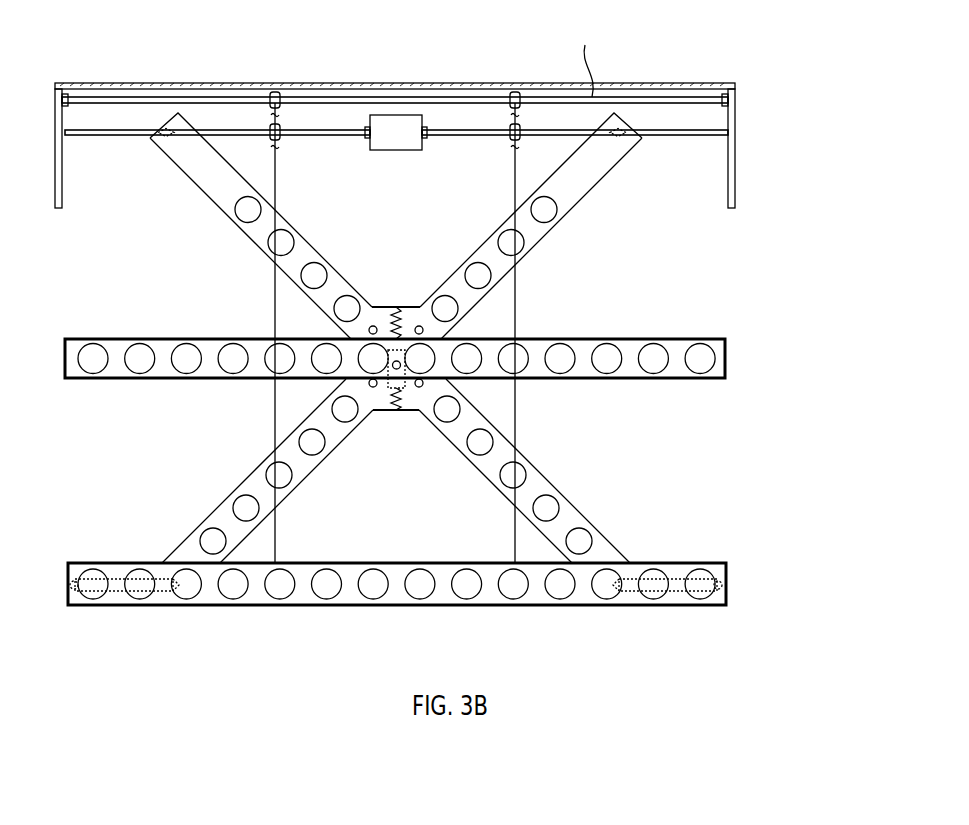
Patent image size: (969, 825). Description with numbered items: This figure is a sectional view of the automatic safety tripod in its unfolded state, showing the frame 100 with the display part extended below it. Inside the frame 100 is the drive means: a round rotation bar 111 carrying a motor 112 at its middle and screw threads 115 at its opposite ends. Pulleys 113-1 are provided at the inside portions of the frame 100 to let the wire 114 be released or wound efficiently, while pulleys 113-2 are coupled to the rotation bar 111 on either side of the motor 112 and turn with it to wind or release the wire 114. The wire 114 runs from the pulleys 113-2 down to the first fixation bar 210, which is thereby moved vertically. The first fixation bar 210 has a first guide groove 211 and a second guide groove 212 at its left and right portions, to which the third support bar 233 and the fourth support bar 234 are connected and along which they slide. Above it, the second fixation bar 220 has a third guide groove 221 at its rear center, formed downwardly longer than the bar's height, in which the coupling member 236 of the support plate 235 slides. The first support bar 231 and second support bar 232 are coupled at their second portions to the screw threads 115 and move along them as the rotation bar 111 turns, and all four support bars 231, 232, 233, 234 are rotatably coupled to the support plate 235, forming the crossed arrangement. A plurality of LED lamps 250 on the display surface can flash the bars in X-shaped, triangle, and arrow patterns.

The frame 100 is at (737, 112).
The rotation bar 111 is at (322, 130).
The motor 112 is at (402, 115).
The pulleys 113-1 is at (517, 93).
The pulleys 113-2 is at (507, 138).
The wire 114 is at (277, 177).
The screw threads 115 is at (688, 128).
The first fixation bar 210 is at (728, 582).
The first guide groove 211 is at (114, 587).
The second guide groove 212 is at (676, 587).
The second fixation bar 220 is at (727, 357).
The third guide groove 221 is at (396, 412).
The first support bar 231 is at (225, 214).
The second support bar 232 is at (568, 214).
The third support bar 233 is at (225, 510).
The fourth support bar 234 is at (568, 510).
The support plate 235 is at (397, 303).
The coupling member 236 is at (405, 362).
The LED lamps 250 is at (704, 352).